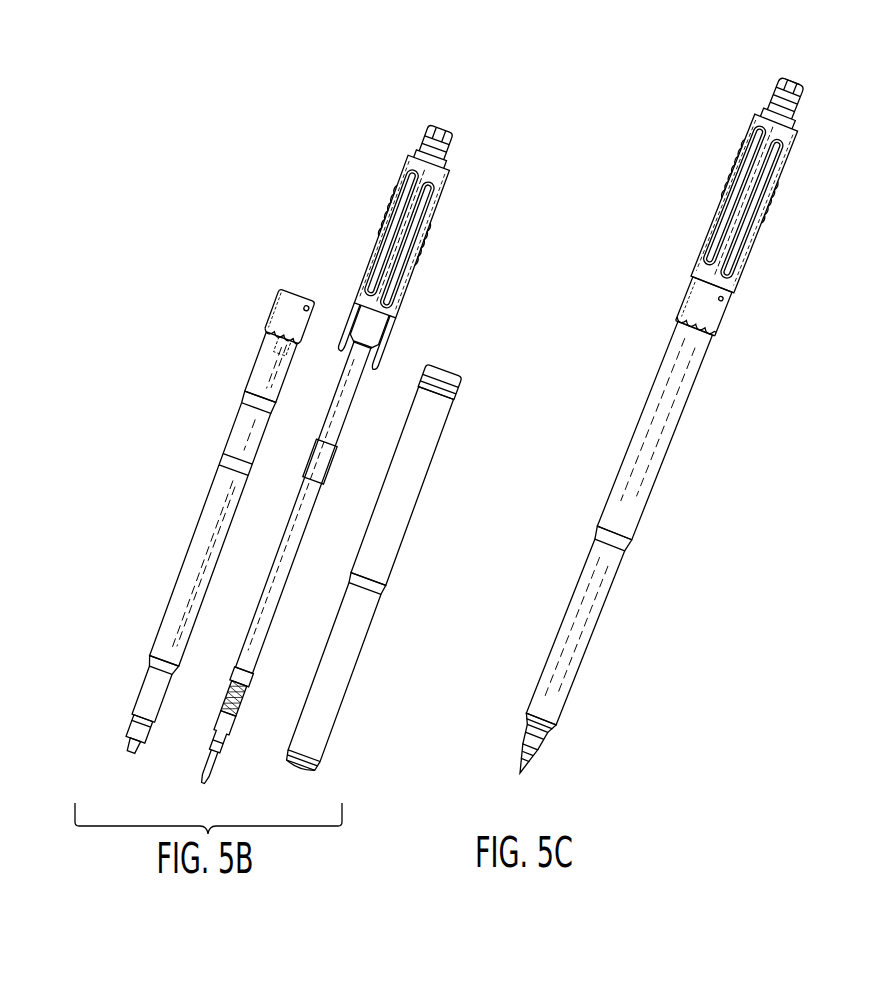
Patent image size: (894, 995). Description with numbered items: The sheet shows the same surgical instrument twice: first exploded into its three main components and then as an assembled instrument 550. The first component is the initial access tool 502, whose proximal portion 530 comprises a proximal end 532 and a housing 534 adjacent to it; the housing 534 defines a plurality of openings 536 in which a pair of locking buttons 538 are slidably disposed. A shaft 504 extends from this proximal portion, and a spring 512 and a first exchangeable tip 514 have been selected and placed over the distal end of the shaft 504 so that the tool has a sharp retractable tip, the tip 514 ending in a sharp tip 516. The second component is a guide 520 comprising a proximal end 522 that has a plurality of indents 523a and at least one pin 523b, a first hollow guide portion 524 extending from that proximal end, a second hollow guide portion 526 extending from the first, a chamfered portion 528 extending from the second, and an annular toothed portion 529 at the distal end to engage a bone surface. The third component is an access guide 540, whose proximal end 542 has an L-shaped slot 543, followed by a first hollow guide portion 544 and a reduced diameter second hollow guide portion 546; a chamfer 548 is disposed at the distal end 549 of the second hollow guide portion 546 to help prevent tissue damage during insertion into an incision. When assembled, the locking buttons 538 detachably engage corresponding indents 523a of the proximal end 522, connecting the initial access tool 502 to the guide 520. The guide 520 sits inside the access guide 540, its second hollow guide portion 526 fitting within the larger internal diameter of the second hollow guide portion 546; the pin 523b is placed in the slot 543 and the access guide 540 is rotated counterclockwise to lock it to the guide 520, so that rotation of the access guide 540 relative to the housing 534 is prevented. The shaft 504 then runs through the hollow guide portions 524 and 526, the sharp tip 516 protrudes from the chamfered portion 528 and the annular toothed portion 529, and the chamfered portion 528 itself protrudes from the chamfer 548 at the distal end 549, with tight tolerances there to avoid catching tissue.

In FIG. 5B, the initial access tool 502 is at (367, 226).
In FIG. 5C, the initial access tool 502 is at (710, 201).
In FIG. 5B, the shaft 504 is at (256, 628).
In FIG. 5B, the spring 512 is at (226, 703).
In FIG. 5B, the first exchangeable tip 514 is at (206, 766).
In FIG. 5C, the sharp tip 516 is at (526, 776).
In FIG. 5B, the guide 520 is at (300, 285).
In FIG. 5B, the proximal end 522 is at (281, 303).
In FIG. 5C, the proximal end 522 is at (735, 311).
In FIG. 5B, the indents 523a is at (280, 340).
In FIG. 5B, the pin 523b is at (268, 318).
In FIG. 5C, the pin 523b is at (688, 310).
In FIG. 5B, the first hollow guide portion 524 is at (266, 367).
In FIG. 5B, the second hollow guide portion 526 is at (208, 523).
In FIG. 5B, the chamfered portion 528 is at (123, 728).
In FIG. 5C, the chamfered portion 528 is at (530, 746).
In FIG. 5B, the annular toothed portion 529 is at (125, 748).
In FIG. 5C, the annular toothed portion 529 is at (526, 762).
In FIG. 5B, the proximal portion 530 is at (405, 160).
In FIG. 5C, the proximal portion 530 is at (744, 203).
In FIG. 5B, the proximal end 532 is at (458, 142).
In FIG. 5C, the proximal end 532 is at (803, 97).
In FIG. 5B, the housing 534 is at (441, 173).
In FIG. 5C, the housing 534 is at (752, 127).
In FIG. 5B, the openings 536 is at (428, 224).
In FIG. 5B, the locking buttons 538 is at (342, 345).
In FIG. 5C, the locking buttons 538 is at (680, 300).
In FIG. 5B, the access guide 540 is at (449, 360).
In FIG. 5B, the proximal end 542 is at (458, 383).
In FIG. 5C, the proximal end 542 is at (713, 338).
In FIG. 5B, the L-shaped slot 543 is at (432, 388).
In FIG. 5B, the first hollow guide portion 544 is at (398, 508).
In FIG. 5C, the first hollow guide portion 544 is at (660, 460).
In FIG. 5B, the second hollow guide portion 546 is at (329, 695).
In FIG. 5C, the second hollow guide portion 546 is at (600, 620).
In FIG. 5B, the chamfer 548 is at (311, 772).
In FIG. 5C, the chamfer 548 is at (543, 737).
In FIG. 5B, the distal end 549 is at (304, 778).
In FIG. 5C, the distal end 549 is at (548, 748).
In FIG. 5C, the assembled instrument 550 is at (782, 72).